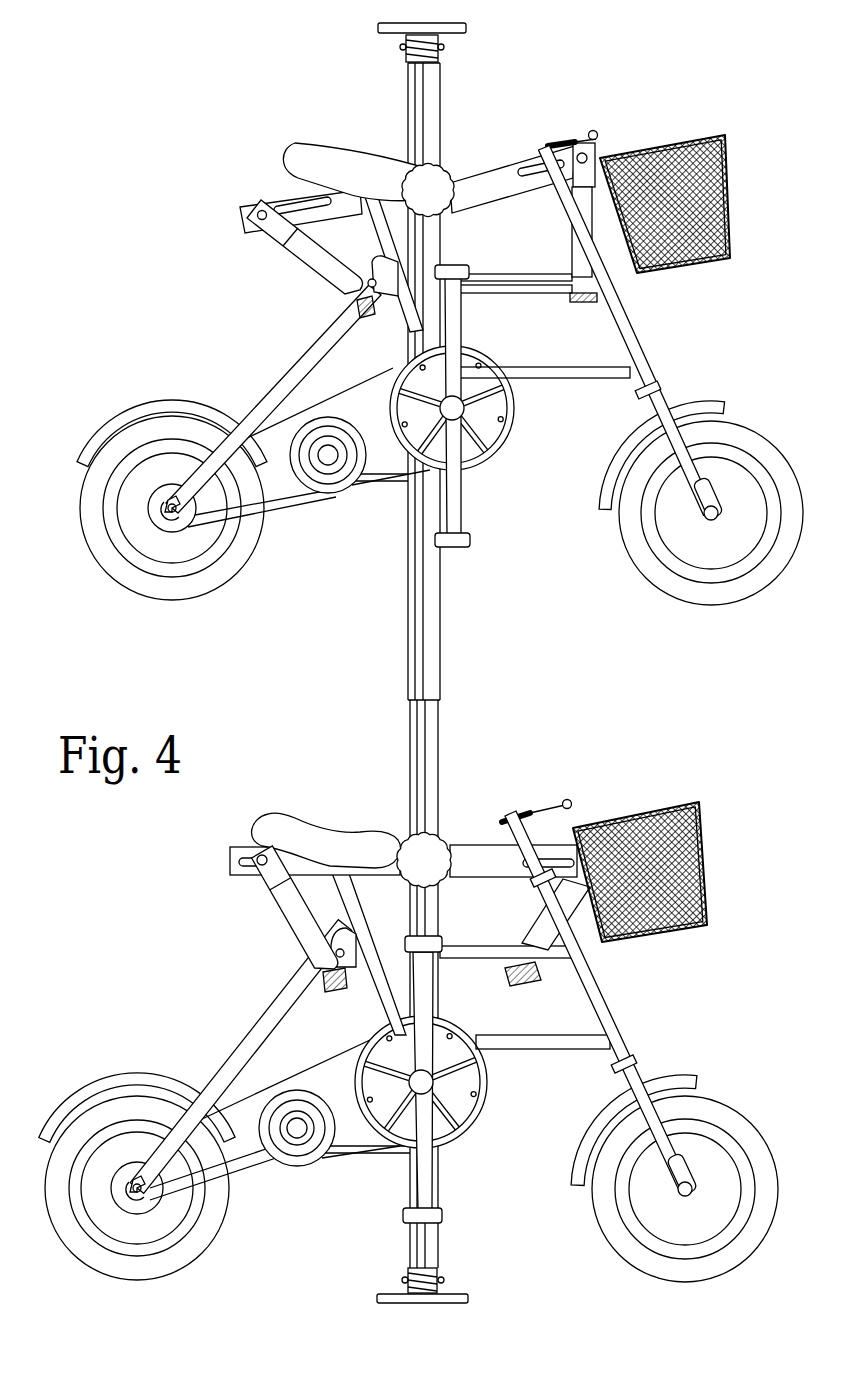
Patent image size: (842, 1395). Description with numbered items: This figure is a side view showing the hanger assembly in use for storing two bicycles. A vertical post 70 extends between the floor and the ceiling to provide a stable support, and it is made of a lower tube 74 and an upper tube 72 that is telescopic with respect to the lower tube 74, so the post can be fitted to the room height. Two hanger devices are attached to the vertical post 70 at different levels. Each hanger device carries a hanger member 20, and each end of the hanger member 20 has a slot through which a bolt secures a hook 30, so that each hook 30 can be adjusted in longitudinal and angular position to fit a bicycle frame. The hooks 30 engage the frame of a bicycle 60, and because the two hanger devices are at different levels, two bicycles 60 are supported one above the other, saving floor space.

The hanger member 20 is at (502, 136).
The hook 30 is at (317, 266).
The bicycle 60 is at (667, 340).
The vertical post 70 is at (423, 91).
The upper tube 72 is at (420, 650).
The lower tube 74 is at (423, 763).